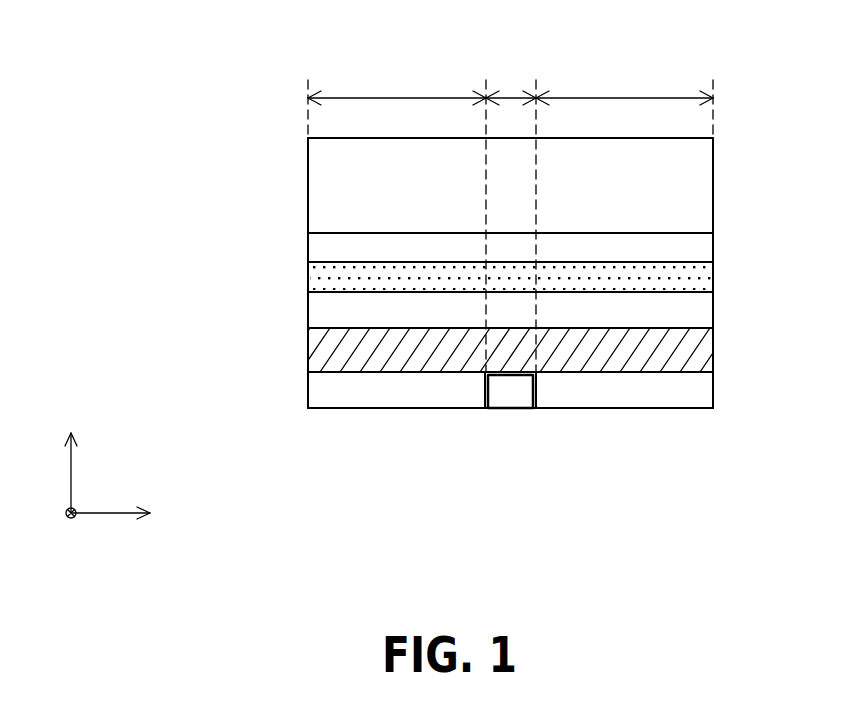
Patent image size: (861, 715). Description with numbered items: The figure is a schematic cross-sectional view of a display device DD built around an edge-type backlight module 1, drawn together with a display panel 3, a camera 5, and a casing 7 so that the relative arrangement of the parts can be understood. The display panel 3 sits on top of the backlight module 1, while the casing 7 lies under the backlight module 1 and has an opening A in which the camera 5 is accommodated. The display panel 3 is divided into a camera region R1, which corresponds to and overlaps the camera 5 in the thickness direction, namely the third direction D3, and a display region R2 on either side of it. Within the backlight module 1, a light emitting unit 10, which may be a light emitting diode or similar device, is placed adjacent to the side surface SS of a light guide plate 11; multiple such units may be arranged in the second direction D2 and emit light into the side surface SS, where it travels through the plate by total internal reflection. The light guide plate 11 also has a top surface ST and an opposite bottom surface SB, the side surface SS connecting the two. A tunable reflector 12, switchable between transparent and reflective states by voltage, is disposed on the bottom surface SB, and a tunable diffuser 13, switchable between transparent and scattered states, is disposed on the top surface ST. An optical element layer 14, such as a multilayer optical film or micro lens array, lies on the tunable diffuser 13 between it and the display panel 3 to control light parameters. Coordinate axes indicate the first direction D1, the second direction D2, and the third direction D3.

The display device DD is at (120, 1).
The backlight module 1 is at (120, 118).
The display panel 3 is at (698, 192).
The camera 5 is at (497, 404).
The casing 7 is at (698, 393).
The light emitting unit 10 is at (308, 302).
The light guide plate 11 is at (698, 309).
The tunable reflector 12 is at (698, 351).
The tunable diffuser 13 is at (698, 279).
The optical element layer 14 is at (698, 249).
The opening A is at (524, 388).
The top surface ST is at (340, 291).
The side surface SS is at (305, 300).
The bottom surface SB is at (347, 330).
The camera region R1 is at (511, 213).
The display region R2 is at (510, 100).
The first direction D1 is at (134, 517).
The second direction D2 is at (56, 532).
The third direction D3 is at (76, 456).